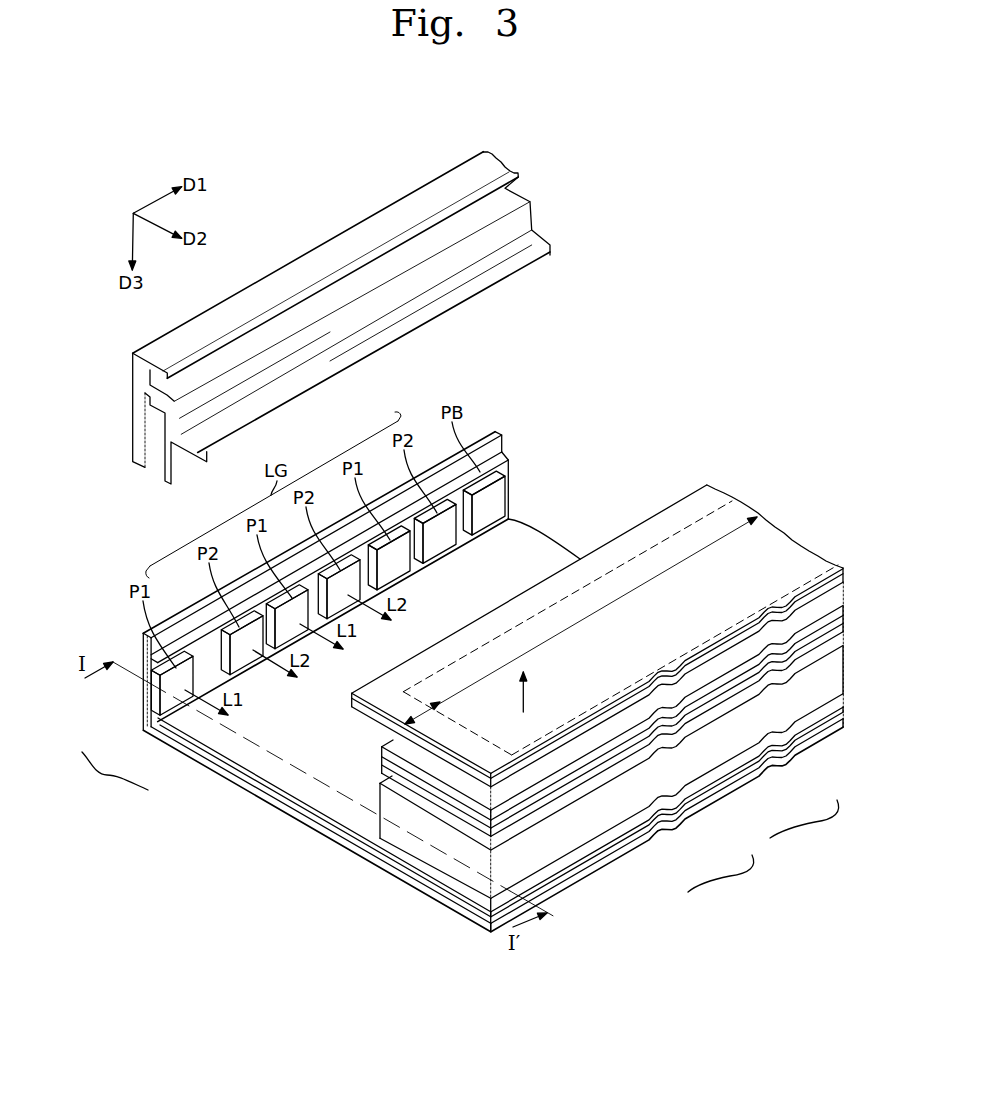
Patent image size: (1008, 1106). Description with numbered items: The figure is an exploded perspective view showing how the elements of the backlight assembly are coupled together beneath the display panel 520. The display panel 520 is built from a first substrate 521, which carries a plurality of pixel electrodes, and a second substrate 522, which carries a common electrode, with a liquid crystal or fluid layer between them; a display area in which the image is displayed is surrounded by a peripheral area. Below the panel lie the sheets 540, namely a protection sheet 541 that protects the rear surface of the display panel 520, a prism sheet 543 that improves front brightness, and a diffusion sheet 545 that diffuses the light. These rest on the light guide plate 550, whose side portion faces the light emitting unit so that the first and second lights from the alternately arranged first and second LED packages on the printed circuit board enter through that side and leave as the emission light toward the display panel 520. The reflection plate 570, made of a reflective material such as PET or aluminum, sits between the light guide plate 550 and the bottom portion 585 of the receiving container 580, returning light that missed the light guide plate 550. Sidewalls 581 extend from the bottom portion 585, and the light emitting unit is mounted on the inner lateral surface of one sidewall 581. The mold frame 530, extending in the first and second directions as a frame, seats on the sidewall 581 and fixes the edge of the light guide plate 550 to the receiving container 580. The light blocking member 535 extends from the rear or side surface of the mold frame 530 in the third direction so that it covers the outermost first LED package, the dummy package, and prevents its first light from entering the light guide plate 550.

The mold frame 530 is at (326, 258).
The light blocking member 535 is at (166, 472).
The receiving container 580 is at (111, 777).
The sidewalls 581 is at (146, 708).
The bottom portion 585 is at (190, 754).
The reflection plate 570 is at (240, 776).
The light guide plate 550 is at (555, 845).
The sheets 540 is at (612, 753).
The protection sheet 541 is at (600, 746).
The prism sheet 543 is at (585, 762).
The diffusion sheet 545 is at (570, 778).
The display panel 520 is at (600, 667).
The first substrate 521 is at (620, 705).
The second substrate 522 is at (670, 671).